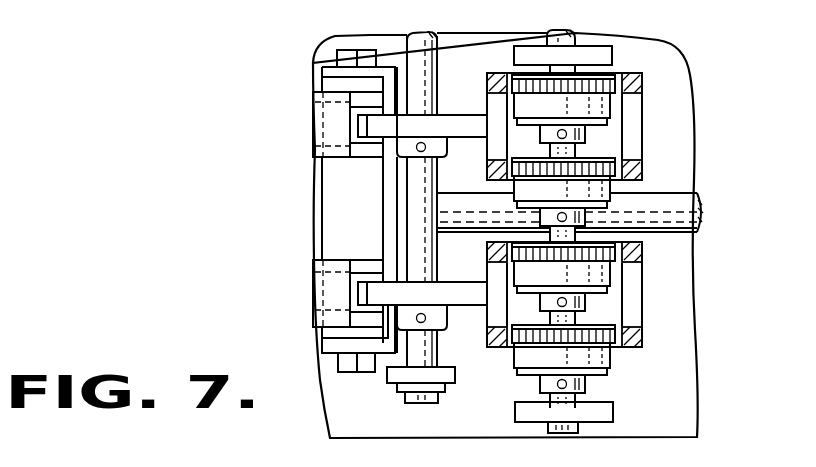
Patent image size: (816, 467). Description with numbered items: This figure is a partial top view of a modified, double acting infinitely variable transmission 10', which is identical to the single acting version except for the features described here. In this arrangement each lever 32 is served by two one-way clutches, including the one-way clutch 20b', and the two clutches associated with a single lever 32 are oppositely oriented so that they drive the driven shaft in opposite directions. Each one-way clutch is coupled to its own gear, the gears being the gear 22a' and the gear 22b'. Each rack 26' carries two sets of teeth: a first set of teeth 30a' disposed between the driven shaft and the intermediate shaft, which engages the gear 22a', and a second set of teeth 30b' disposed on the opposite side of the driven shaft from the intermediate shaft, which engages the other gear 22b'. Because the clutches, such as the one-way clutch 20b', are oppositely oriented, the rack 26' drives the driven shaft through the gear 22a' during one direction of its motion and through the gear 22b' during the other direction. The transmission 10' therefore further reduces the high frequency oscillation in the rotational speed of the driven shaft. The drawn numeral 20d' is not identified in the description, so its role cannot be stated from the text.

The double acting infinitely variable transmission 10' is at (463, 234).
The lever 32 is at (313, 120).
The rack 26' is at (614, 210).
The first set of teeth 30a' is at (477, 238).
The second set of teeth 30b' is at (625, 210).
The gear 22a' is at (629, 98).
The gear 22b' is at (639, 199).
The gear hub 20d' is at (632, 102).
The one-way clutch 20b' is at (604, 212).